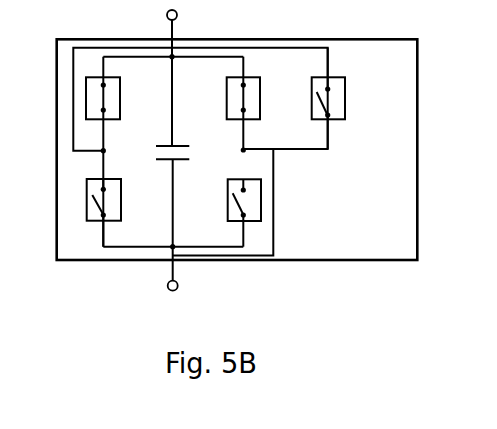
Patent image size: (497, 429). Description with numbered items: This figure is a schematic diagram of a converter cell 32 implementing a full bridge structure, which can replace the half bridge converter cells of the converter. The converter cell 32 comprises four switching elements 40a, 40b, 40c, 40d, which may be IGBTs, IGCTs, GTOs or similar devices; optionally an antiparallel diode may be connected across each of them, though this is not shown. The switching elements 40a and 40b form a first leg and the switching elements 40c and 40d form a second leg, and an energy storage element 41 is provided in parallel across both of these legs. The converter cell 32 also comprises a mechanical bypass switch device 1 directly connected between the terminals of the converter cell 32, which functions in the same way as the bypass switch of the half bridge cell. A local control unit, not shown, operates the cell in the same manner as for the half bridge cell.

The mechanical bypass switch device 1 is at (345, 105).
The converter cell 32 is at (202, 39).
The switching element 40a is at (92, 77).
The switching element 40b is at (91, 221).
The switching element 40c is at (255, 77).
The switching element 40d is at (252, 222).
The energy storage element 41 is at (178, 143).